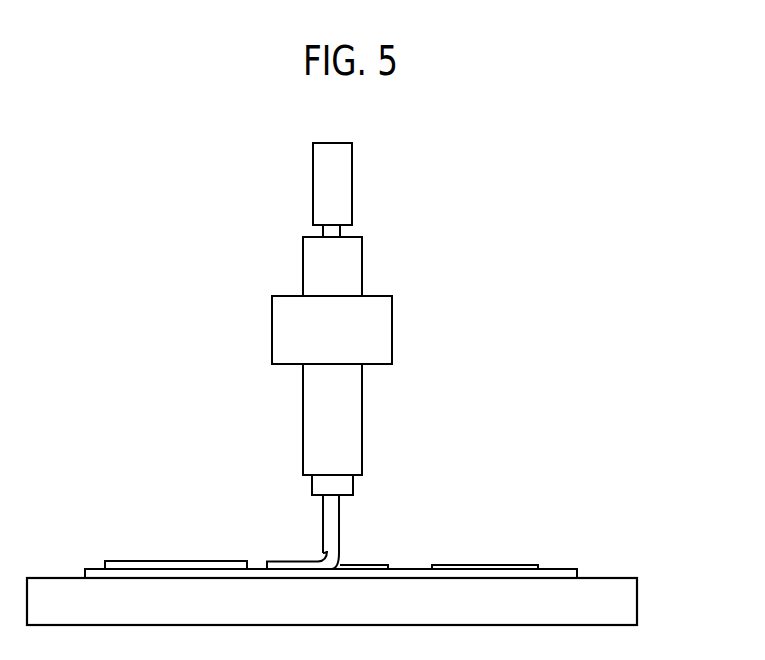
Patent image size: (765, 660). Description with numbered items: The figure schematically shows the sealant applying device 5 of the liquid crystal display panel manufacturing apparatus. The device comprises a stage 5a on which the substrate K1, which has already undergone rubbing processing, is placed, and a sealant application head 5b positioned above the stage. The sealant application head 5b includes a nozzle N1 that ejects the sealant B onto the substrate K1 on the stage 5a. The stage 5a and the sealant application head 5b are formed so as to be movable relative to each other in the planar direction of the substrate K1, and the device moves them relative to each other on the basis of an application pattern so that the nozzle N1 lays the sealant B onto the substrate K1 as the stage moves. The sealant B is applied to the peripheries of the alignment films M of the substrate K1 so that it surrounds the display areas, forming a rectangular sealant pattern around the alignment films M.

The sealant applying device 5 is at (576, 309).
The stage 5a is at (630, 598).
The sealant application head 5b is at (362, 397).
The nozzle N1 is at (343, 515).
The sealant B is at (163, 561).
The alignment films M is at (378, 565).
The substrate K1 is at (558, 569).